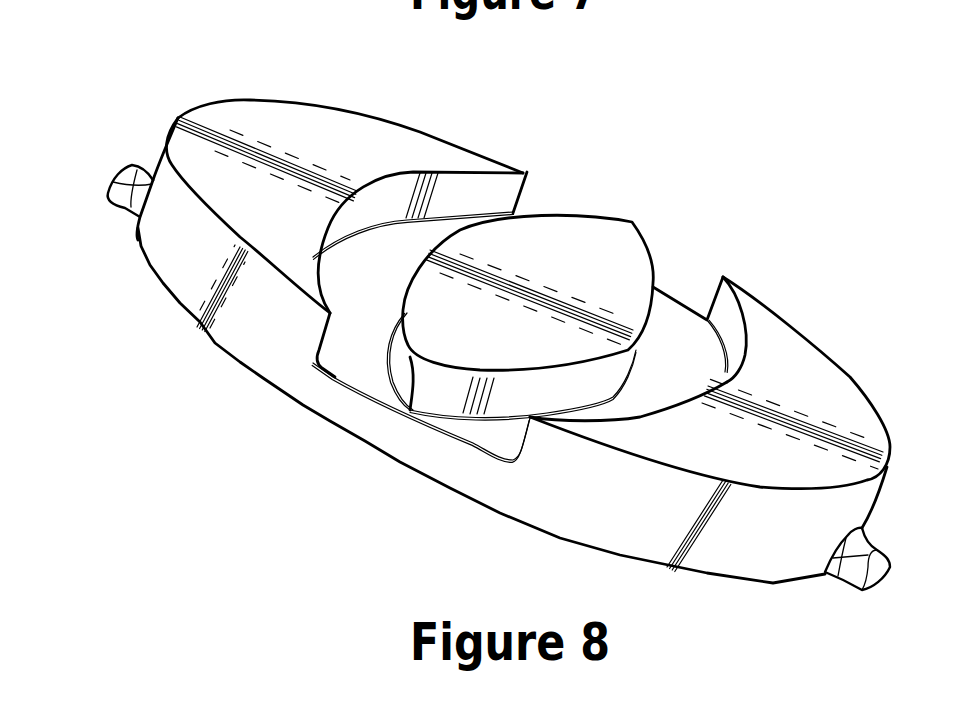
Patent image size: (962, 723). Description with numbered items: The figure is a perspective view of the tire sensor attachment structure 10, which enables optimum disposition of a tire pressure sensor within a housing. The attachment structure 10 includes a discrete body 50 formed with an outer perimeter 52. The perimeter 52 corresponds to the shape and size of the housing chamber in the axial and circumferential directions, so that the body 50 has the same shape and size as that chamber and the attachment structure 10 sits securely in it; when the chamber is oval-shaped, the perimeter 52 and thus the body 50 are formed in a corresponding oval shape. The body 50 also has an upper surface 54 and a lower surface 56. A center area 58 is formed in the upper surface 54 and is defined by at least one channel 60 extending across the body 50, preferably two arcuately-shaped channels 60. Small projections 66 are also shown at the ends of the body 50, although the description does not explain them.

The tire sensor attachment structure 10 is at (353, 512).
The body 50 is at (806, 330).
The outer perimeter 52 is at (380, 120).
The upper surface 54 is at (247, 115).
The lower surface 56 is at (222, 352).
The center area 58 is at (617, 250).
The channel 60 is at (333, 354).
The tab 66 is at (120, 205).